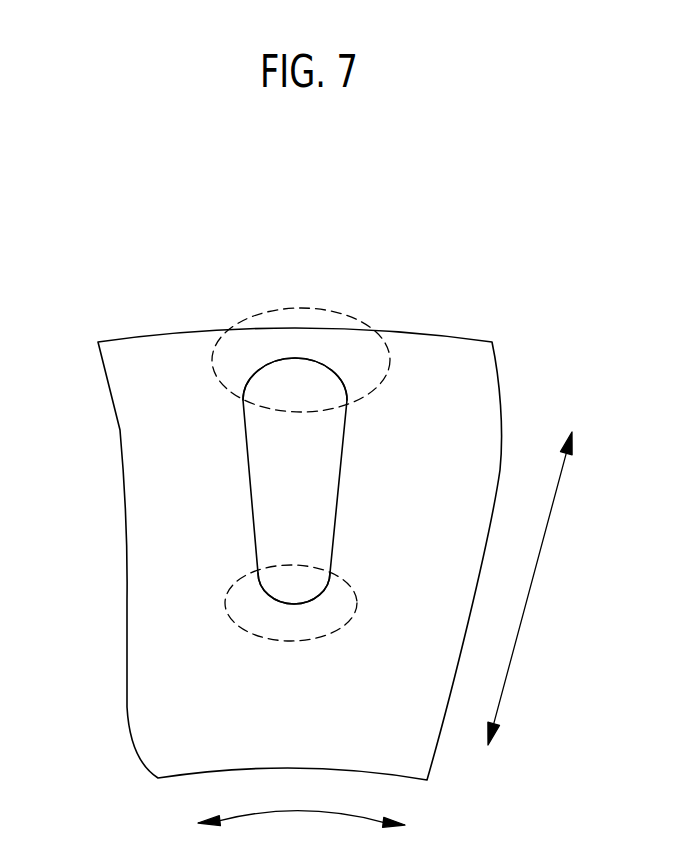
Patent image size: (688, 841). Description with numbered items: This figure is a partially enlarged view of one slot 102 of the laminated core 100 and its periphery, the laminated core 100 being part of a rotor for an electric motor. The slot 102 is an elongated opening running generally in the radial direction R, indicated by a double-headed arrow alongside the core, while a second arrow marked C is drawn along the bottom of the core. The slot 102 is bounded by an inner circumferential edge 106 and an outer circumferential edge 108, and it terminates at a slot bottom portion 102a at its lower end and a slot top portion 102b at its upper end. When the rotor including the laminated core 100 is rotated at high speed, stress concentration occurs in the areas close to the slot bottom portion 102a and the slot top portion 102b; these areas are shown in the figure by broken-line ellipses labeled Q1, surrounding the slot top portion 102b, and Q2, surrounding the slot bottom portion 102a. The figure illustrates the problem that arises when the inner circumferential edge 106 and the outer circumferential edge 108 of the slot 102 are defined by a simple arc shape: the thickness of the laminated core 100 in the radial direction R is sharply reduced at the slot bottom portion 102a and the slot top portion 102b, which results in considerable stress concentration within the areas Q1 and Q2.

The laminated core 100 is at (442, 402).
The slot 102 is at (328, 478).
The slot bottom portion 102a is at (290, 603).
The slot top portion 102b is at (297, 358).
The inner circumferential edge 106 is at (263, 590).
The outer circumferential edge 108 is at (260, 372).
The stress concentration area Q1 is at (247, 312).
The stress concentration area Q2 is at (223, 618).
The radial direction R is at (530, 588).
The circumferential direction C is at (301, 800).